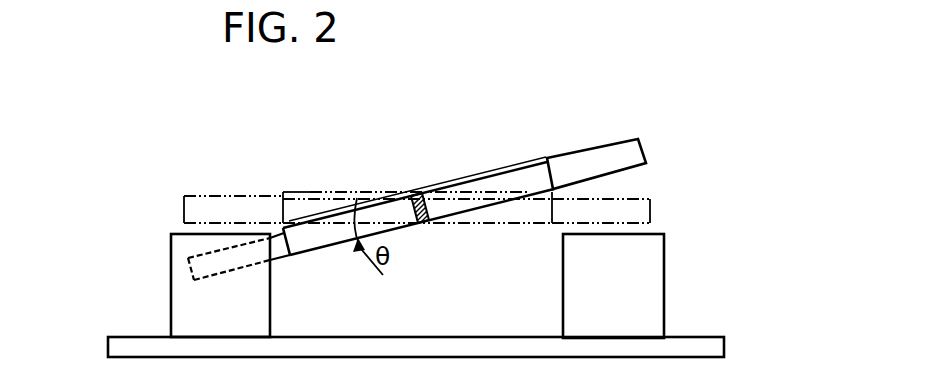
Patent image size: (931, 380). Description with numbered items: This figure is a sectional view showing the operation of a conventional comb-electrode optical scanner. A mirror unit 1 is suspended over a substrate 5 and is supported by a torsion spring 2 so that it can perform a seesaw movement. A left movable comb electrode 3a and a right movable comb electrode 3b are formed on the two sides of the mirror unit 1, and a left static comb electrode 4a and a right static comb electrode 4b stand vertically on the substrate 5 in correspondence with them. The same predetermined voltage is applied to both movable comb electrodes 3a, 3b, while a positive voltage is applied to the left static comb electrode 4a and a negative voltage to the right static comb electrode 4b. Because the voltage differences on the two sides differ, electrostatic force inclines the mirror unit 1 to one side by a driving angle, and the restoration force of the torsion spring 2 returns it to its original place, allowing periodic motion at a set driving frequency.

The mirror unit 1 is at (523, 163).
The torsion spring 2 is at (423, 193).
The left movable comb electrode 3a is at (203, 267).
The right movable comb electrode 3b is at (640, 155).
The left static comb electrode 4a is at (195, 315).
The right static comb electrode 4b is at (638, 293).
The substrate 5 is at (707, 348).